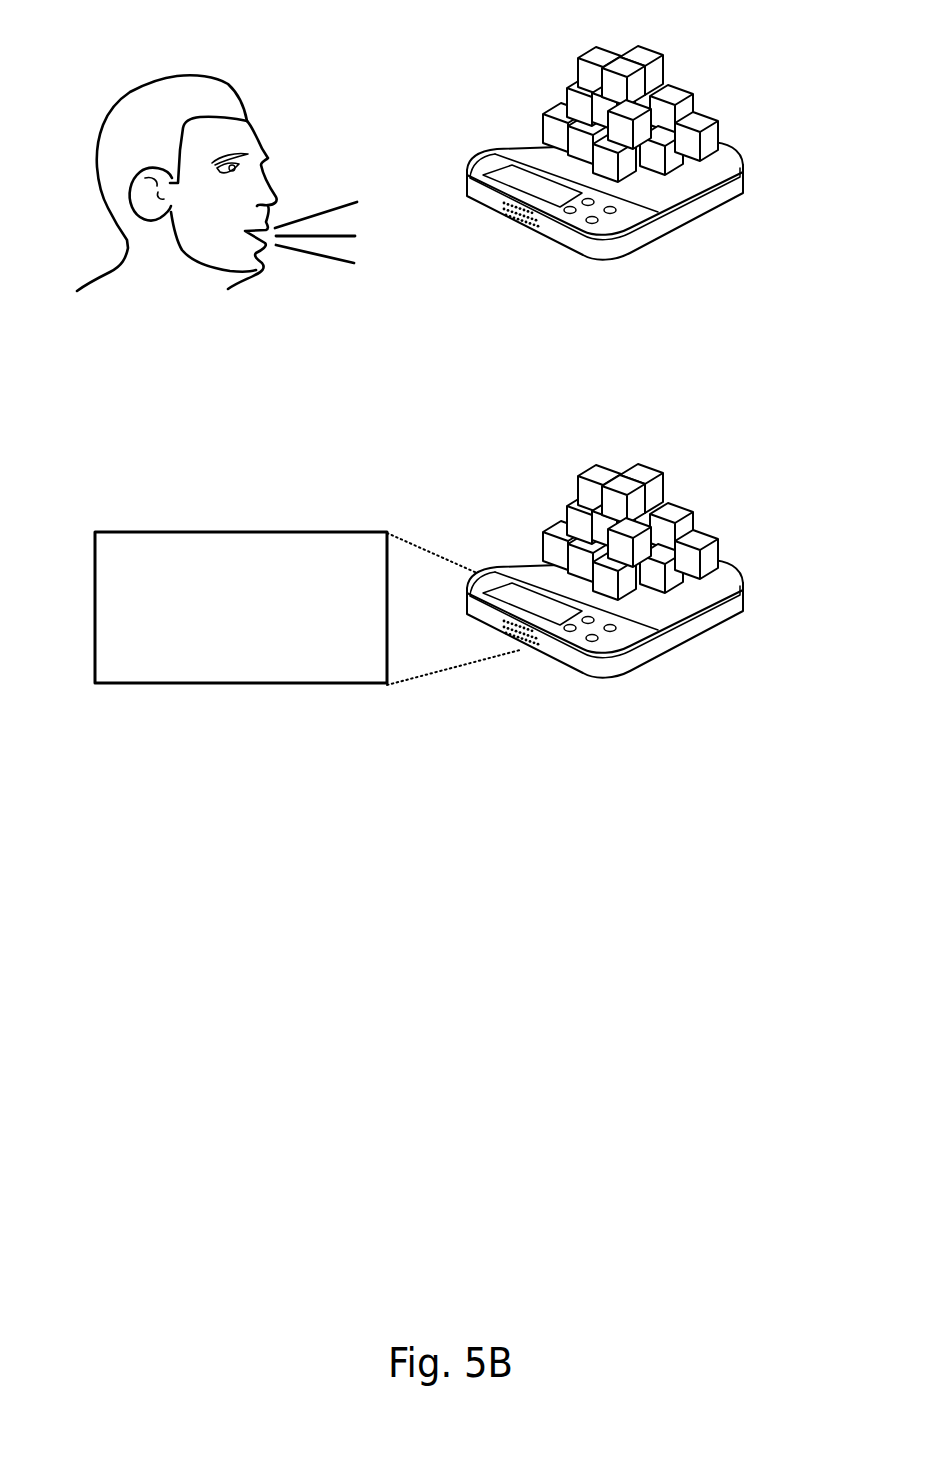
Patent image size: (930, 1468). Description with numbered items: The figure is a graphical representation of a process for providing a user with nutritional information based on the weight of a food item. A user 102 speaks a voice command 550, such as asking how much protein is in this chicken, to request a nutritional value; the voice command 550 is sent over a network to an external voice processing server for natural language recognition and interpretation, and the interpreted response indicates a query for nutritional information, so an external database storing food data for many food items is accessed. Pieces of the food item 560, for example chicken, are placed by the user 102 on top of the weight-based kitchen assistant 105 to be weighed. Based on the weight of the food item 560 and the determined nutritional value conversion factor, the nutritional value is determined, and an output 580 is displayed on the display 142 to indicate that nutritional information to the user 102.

The user 102 is at (227, 80).
The voice command 550 is at (323, 213).
The food item 560 is at (680, 101).
The weight-based kitchen assistant 105 is at (673, 231).
The display 142 is at (553, 625).
The output 580 is at (192, 533).